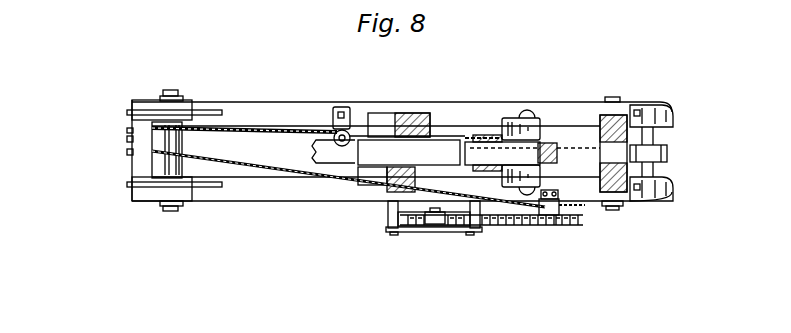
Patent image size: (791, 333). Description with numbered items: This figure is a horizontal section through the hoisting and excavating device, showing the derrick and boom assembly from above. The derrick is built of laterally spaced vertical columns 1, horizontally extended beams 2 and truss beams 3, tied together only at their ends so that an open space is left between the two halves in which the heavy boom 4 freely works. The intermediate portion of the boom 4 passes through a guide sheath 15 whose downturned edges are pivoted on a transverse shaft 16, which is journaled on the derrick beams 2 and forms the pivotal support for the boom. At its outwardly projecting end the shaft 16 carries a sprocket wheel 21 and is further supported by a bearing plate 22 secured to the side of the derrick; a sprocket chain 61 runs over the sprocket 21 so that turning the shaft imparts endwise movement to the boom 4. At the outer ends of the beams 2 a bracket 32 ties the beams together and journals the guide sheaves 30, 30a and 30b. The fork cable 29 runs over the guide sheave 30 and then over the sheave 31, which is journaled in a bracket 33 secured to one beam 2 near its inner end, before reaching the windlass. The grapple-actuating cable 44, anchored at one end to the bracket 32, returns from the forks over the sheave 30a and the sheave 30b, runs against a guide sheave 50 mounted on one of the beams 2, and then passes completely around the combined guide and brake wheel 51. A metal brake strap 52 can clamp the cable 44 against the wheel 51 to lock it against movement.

The vertical column 1 is at (616, 122).
The horizontal beam 2 is at (564, 110).
The truss beam 3 is at (407, 114).
The boom 4 is at (511, 152).
The guide sheath 15 is at (386, 152).
The transverse shaft 16 is at (436, 234).
The sprocket wheel 21 is at (453, 228).
The bearing plate 22 is at (420, 236).
The cable 29 is at (348, 175).
The guide sheave 30 is at (130, 151).
The guide sheave 30a is at (128, 140).
The guide sheave 30b is at (131, 131).
The guide sheave 31 is at (558, 216).
The bracket 32 is at (135, 193).
The bracket 33 is at (545, 223).
The grapple-actuating cable 44 is at (254, 128).
The guide sheave 50 is at (350, 131).
The combined guide and brake wheel 51 is at (660, 142).
The brake strap 52 is at (668, 153).
The sprocket chain 61 is at (528, 228).